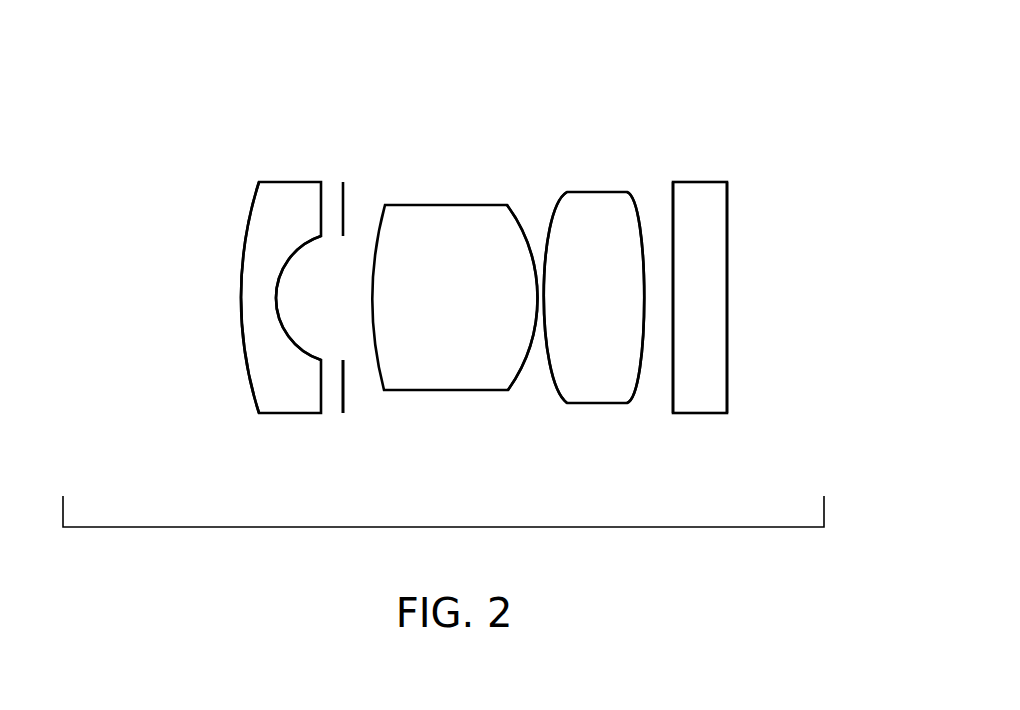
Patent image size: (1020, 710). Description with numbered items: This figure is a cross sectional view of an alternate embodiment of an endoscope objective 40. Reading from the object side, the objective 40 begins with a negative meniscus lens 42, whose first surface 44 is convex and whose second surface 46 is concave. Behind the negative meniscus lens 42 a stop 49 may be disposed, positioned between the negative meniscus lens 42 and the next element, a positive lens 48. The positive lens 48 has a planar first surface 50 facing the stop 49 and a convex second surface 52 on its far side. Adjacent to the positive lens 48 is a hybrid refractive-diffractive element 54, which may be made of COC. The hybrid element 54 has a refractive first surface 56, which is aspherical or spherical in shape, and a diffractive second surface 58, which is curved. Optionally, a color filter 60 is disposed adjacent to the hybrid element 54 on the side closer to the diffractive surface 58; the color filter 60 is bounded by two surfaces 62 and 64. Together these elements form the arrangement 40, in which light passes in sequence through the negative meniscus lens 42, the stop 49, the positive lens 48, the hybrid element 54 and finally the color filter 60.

The objective 40 is at (739, 60).
The negative meniscus lens 42 is at (291, 181).
The first surface 44 is at (242, 277).
The second surface 46 is at (280, 278).
The positive lens 48 is at (437, 203).
The stop 49 is at (345, 395).
The planar first surface 50 is at (380, 223).
The convex second surface 52 is at (515, 204).
The hybrid refractive-diffractive element 54 is at (595, 191).
The refractive first surface 56 is at (558, 384).
The diffractive second surface 58 is at (635, 385).
The color filter 60 is at (698, 182).
The surface 62 is at (672, 222).
The surface 64 is at (727, 225).